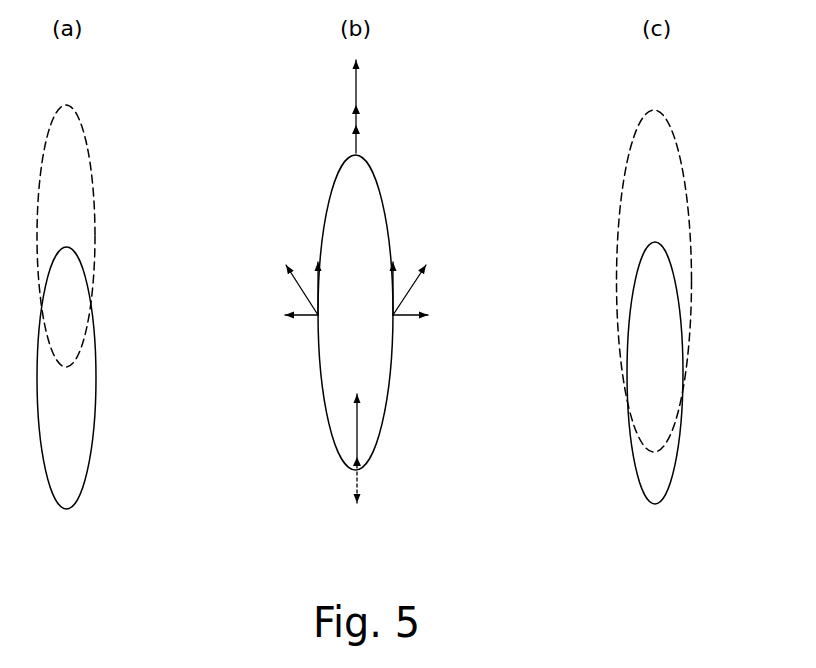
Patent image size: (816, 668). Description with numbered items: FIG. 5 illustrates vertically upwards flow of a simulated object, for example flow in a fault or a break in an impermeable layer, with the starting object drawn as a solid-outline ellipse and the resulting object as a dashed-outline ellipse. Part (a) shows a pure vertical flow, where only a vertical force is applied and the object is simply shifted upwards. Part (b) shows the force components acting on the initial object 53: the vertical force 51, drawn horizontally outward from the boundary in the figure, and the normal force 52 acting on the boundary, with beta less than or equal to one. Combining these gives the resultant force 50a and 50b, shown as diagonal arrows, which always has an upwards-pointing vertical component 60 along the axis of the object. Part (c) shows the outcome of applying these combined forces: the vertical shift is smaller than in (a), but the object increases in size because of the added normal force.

The initial object 53 is at (381, 203).
The upwards-pointing vertical component 60 is at (357, 90).
The normal force 52 is at (372, 290).
The resultant force 50b is at (300, 280).
The resultant force 50a is at (405, 290).
The vertical force 51 is at (300, 318).